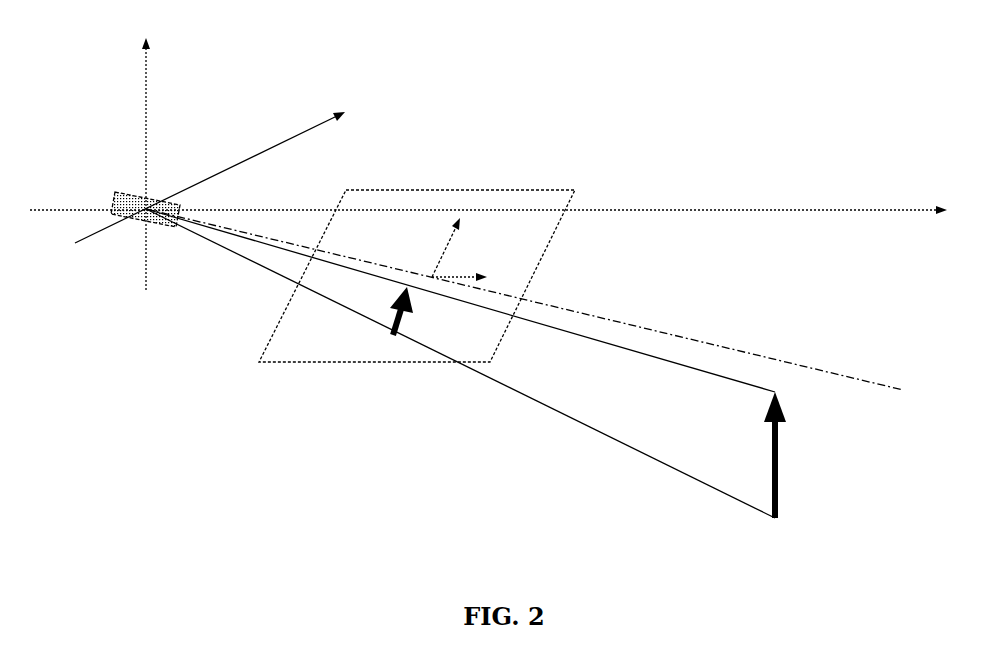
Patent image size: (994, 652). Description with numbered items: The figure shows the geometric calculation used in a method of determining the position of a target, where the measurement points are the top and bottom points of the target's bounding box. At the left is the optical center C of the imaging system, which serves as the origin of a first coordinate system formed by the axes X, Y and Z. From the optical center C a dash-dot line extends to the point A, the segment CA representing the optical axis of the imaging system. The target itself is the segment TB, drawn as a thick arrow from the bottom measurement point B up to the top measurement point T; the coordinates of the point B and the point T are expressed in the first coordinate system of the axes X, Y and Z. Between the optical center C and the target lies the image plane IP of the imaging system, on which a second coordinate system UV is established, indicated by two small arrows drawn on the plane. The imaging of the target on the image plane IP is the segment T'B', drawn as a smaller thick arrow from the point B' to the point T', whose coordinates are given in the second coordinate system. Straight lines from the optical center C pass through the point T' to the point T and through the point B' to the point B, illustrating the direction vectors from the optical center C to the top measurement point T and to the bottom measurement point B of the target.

The X axis of first coordinate system X is at (488, 231).
The Y axis of first coordinate system Y is at (210, 177).
The Z axis of first coordinate system Z is at (129, 164).
The optical center C is at (145, 220).
The image plane IP is at (417, 276).
The optical axis end point A is at (531, 299).
The top measurement point T is at (474, 363).
The bottom measurement point B is at (472, 378).
The image of top measurement point T' is at (418, 311).
The image of bottom measurement point B' is at (380, 345).